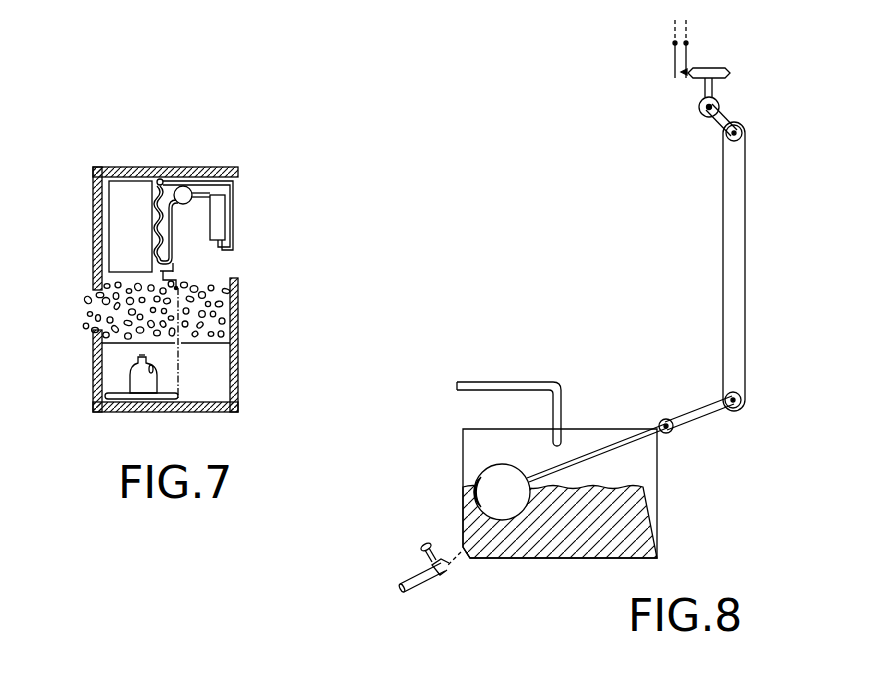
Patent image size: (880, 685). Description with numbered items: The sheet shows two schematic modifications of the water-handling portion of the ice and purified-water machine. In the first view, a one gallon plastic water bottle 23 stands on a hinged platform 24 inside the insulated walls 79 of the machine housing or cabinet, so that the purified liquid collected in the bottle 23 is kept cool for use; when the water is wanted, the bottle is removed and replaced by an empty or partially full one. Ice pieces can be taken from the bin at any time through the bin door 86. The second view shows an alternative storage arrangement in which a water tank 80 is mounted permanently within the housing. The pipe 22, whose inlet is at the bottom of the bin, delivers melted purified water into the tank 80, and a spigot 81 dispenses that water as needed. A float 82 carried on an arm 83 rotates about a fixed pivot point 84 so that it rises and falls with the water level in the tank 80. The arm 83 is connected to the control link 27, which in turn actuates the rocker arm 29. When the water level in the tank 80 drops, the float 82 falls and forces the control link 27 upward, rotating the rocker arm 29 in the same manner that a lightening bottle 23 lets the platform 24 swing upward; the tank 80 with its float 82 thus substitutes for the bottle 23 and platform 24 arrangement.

In FIG. 7, the insulated walls 79 is at (240, 357).
In FIG. 7, the bin door 86 is at (103, 333).
In FIG. 7, the bottle 23 is at (127, 375).
In FIG. 7, the platform 24 is at (131, 400).
In FIG. 8, the rocker arm 29 is at (725, 112).
In FIG. 8, the control link 27 is at (753, 240).
In FIG. 8, the fixed pivot point 84 is at (663, 418).
In FIG. 8, the arm 83 is at (610, 440).
In FIG. 8, the water tank 80 is at (660, 510).
In FIG. 8, the float 82 is at (485, 464).
In FIG. 8, the pipe 22 is at (530, 378).
In FIG. 8, the spigot 81 is at (430, 583).